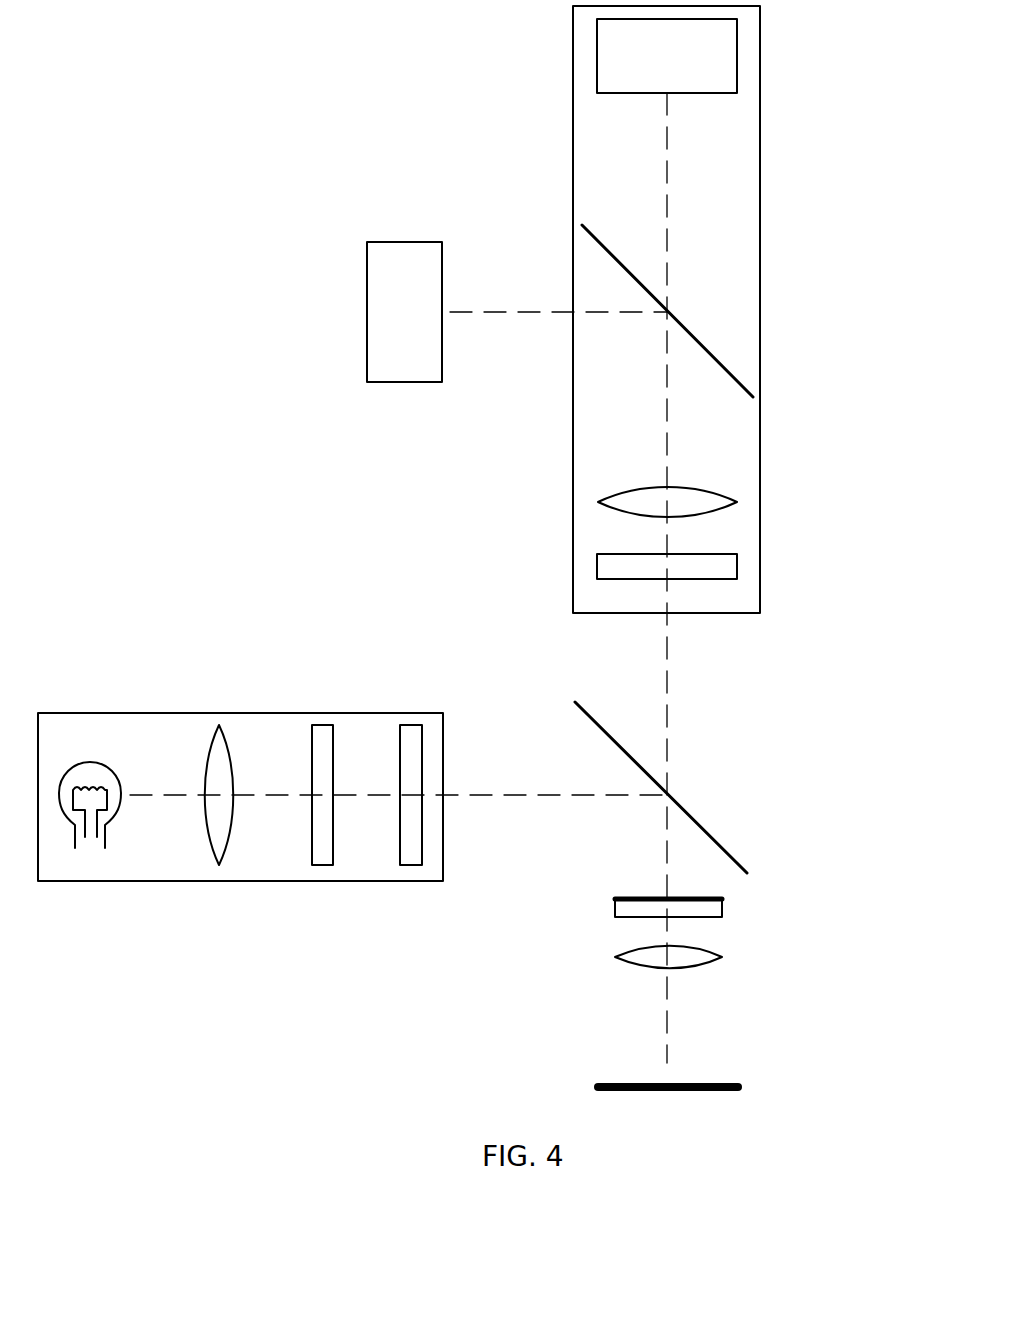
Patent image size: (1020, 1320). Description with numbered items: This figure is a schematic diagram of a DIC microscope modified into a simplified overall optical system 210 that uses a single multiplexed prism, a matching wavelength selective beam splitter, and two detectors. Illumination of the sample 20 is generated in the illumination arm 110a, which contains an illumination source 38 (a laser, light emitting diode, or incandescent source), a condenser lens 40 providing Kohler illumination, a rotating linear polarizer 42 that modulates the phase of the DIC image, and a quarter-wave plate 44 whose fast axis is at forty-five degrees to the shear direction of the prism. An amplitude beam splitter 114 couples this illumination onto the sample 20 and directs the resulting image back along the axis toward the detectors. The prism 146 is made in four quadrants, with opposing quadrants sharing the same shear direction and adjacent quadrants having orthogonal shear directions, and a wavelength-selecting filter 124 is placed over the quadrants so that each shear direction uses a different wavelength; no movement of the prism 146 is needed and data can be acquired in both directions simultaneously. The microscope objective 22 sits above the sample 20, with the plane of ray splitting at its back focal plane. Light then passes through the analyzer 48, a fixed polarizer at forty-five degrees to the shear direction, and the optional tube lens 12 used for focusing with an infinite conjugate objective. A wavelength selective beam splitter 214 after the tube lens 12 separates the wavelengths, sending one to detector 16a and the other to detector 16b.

The detector 16a is at (737, 77).
The detector 16b is at (397, 242).
The optical system 210 is at (338, 313).
The wavelength selective beam splitter 214 is at (728, 362).
The tube lens 12 is at (737, 502).
The analyzer 48 is at (737, 567).
The amplitude beam splitter 114 is at (730, 857).
The multiplexed prism 146 is at (722, 910).
The wavelength-selecting filter 124 is at (613, 898).
The microscope objective 22 is at (722, 957).
The sample 20 is at (738, 1087).
The illumination arm 110a is at (270, 881).
The illumination source 38 is at (88, 765).
The condenser lens 40 is at (219, 727).
The rotating linear polarizer 42 is at (323, 725).
The quarter-wave plate 44 is at (411, 725).